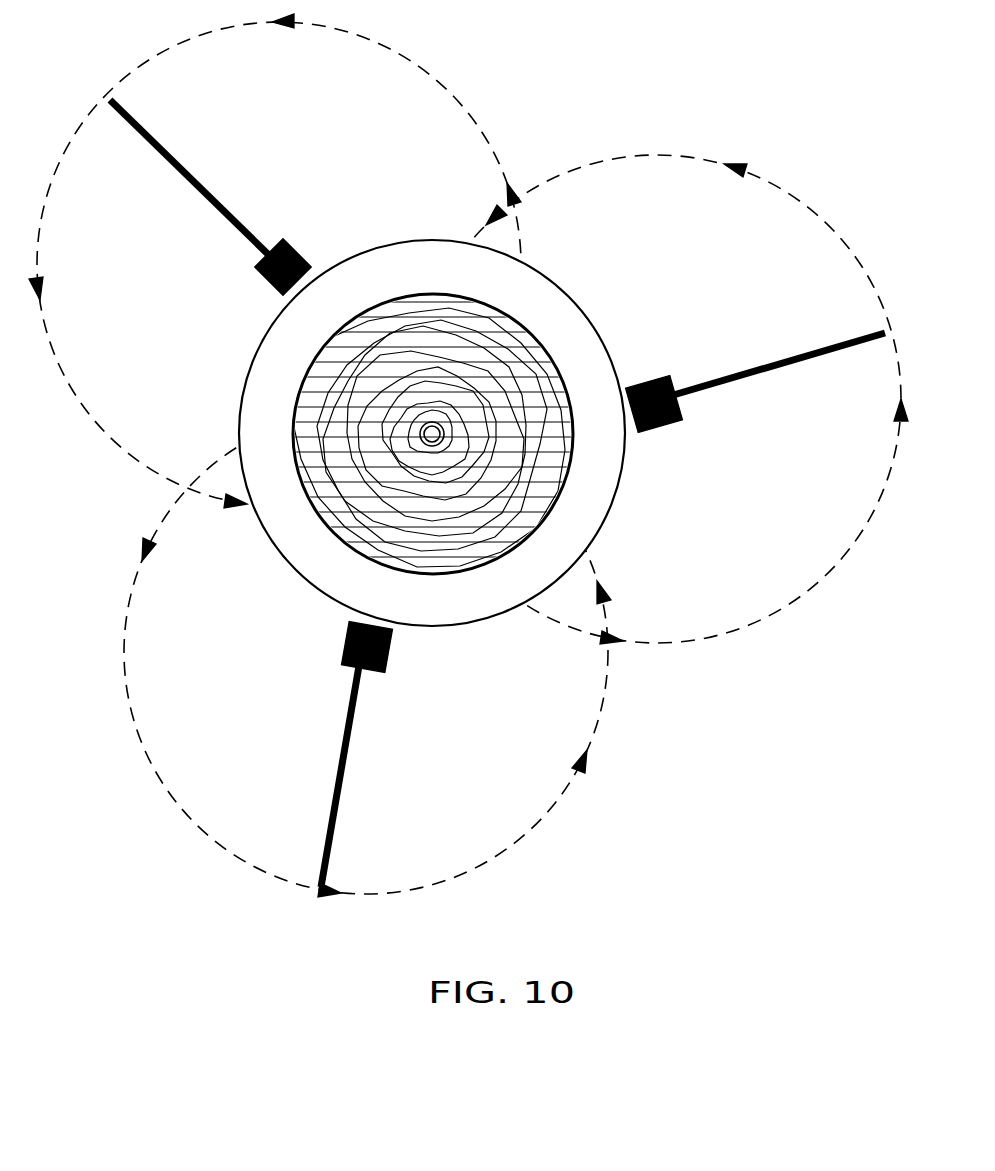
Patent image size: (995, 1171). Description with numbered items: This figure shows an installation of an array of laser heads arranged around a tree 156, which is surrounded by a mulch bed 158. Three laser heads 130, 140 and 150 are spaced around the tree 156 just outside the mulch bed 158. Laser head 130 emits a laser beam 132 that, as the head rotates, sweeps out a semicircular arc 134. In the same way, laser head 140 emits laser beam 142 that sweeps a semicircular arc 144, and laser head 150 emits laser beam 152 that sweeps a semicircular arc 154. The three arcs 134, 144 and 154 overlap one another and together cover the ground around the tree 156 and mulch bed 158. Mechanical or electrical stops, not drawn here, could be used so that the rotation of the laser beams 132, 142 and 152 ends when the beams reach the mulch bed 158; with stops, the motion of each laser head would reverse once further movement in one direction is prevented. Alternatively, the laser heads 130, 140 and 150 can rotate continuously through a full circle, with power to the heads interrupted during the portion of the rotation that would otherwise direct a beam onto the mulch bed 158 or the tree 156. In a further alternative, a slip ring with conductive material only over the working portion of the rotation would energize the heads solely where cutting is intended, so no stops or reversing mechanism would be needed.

The laser head 130 is at (297, 250).
The laser beam 132 is at (220, 210).
The semicircular arc 134 is at (120, 448).
The laser head 140 is at (343, 649).
The laser beam 142 is at (355, 724).
The semicircular arc 144 is at (567, 782).
The laser head 150 is at (666, 424).
The laser beam 152 is at (761, 375).
The semicircular arc 154 is at (776, 607).
The tree 156 is at (552, 362).
The mulch bed 158 is at (523, 289).